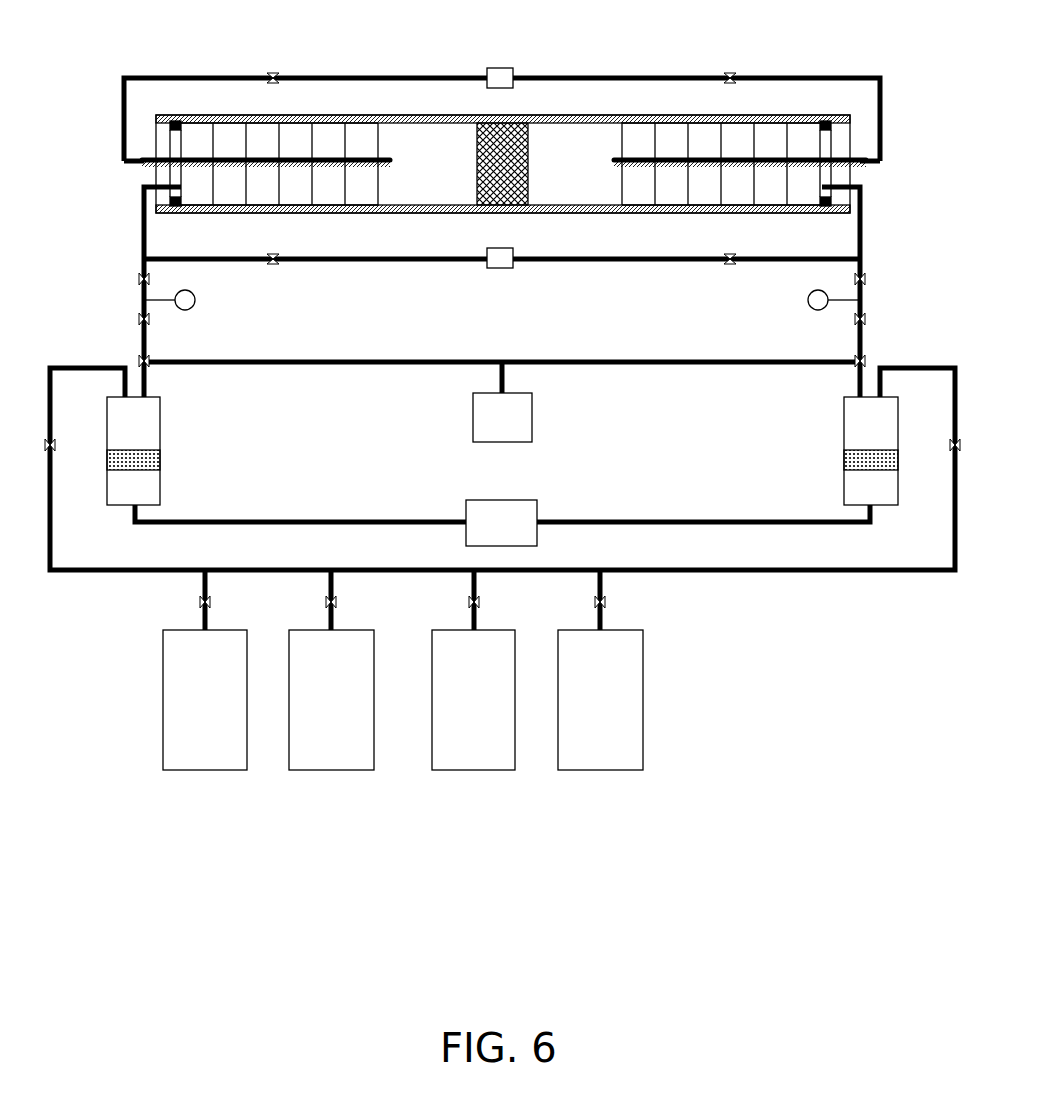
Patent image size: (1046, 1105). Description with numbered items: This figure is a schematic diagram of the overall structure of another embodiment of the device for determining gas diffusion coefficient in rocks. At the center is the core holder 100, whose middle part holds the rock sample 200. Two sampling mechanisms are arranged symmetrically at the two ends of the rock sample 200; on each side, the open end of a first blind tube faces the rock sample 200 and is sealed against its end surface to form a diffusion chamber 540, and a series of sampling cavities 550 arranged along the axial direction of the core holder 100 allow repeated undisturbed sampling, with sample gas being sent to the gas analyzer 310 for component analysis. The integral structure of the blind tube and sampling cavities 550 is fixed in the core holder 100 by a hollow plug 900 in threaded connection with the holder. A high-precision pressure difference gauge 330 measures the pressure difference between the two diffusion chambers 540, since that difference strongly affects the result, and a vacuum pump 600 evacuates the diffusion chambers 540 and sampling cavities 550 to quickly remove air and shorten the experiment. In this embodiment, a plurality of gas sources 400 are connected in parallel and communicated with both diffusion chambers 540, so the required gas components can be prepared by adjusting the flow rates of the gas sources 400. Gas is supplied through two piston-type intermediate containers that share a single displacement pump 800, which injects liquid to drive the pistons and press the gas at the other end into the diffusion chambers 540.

The core holder 100 is at (313, 117).
The rock sample 200 is at (515, 150).
The gas analyzer 310 is at (507, 68).
The pressure difference gauge 330 is at (513, 268).
The gas source 400 is at (582, 693).
The diffusion chamber 540 is at (403, 150).
The sampling cavity 550 is at (232, 127).
The vacuum pump 600 is at (508, 420).
The displacement pump 800 is at (500, 525).
The hollow plug 900 is at (175, 120).